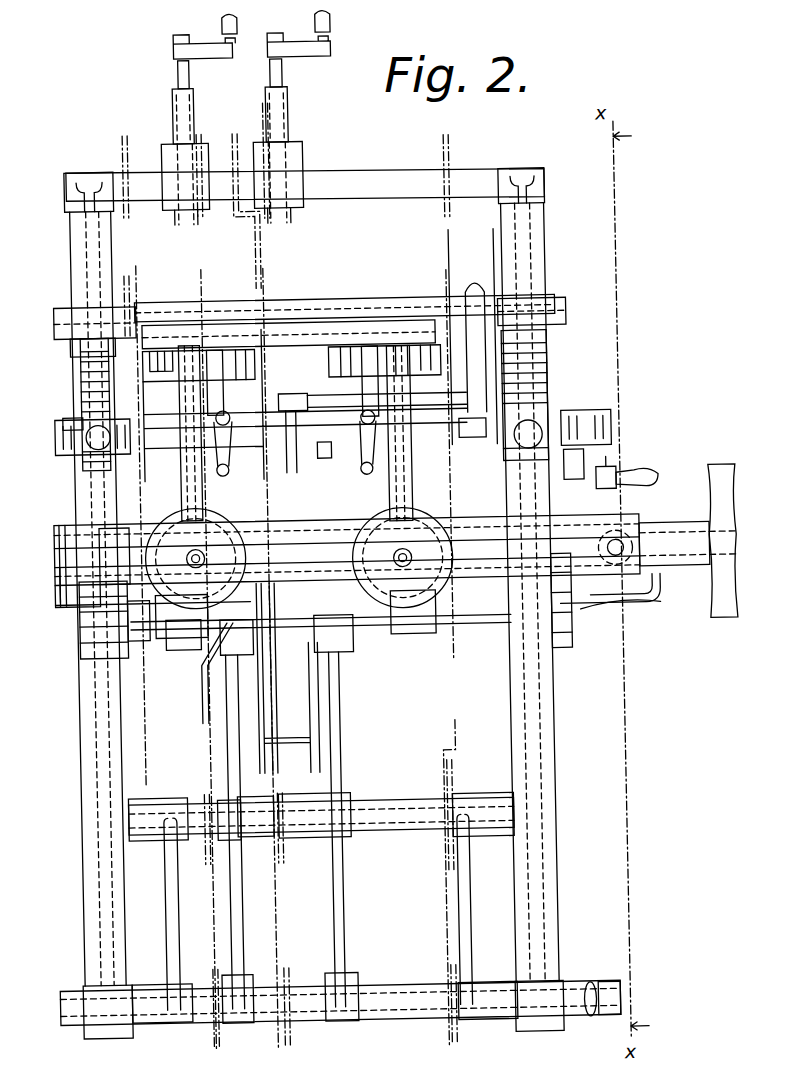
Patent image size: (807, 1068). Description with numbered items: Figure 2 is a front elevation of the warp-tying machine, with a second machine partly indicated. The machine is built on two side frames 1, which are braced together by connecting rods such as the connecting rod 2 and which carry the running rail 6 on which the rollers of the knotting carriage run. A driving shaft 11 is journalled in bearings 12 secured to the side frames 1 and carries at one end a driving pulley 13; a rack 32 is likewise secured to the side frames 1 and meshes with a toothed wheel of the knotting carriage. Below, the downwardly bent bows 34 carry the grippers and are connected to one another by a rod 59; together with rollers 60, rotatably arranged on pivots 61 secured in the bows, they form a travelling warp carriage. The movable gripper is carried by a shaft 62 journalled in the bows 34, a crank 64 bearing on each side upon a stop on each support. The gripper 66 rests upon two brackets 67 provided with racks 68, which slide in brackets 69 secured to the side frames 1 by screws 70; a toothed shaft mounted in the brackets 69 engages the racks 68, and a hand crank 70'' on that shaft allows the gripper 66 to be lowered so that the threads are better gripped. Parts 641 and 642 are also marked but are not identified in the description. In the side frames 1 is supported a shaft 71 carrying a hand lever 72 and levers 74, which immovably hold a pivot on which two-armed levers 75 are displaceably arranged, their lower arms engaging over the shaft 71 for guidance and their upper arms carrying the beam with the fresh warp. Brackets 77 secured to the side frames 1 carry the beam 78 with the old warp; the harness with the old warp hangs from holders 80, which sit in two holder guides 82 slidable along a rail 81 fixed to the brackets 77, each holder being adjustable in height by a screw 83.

The side frame 1 is at (83, 835).
The connecting rod 2 is at (134, 645).
The running rail 6 is at (76, 576).
The driving shaft 11 is at (122, 530).
The bearing 12 is at (658, 603).
The driving pulley 13 is at (723, 634).
The rack 32 is at (324, 516).
The downwardly bent bow 34 is at (186, 461).
The rod 59 is at (184, 635).
The roller 60 is at (221, 507).
The pivot 61 is at (194, 547).
The shaft 62 is at (296, 392).
The crank 64 is at (230, 409).
The rod 641 is at (488, 280).
The block 642 is at (476, 442).
The gripper 66 is at (69, 293).
The bracket 67 is at (566, 309).
The rack 68 is at (90, 373).
The bracket 69 is at (66, 411).
The screw 70 is at (315, 426).
The hand crank 70'' is at (638, 455).
The shaft 71 is at (383, 988).
The hand lever 72 is at (583, 985).
The lever 74 is at (162, 885).
The two-armed lever 75 is at (230, 893).
The bracket 77 is at (82, 223).
The beam 78 is at (346, 295).
The holder 80 is at (182, 107).
The rail 81 is at (227, 164).
The holder guide 82 is at (174, 138).
The screw 83 is at (188, 61).